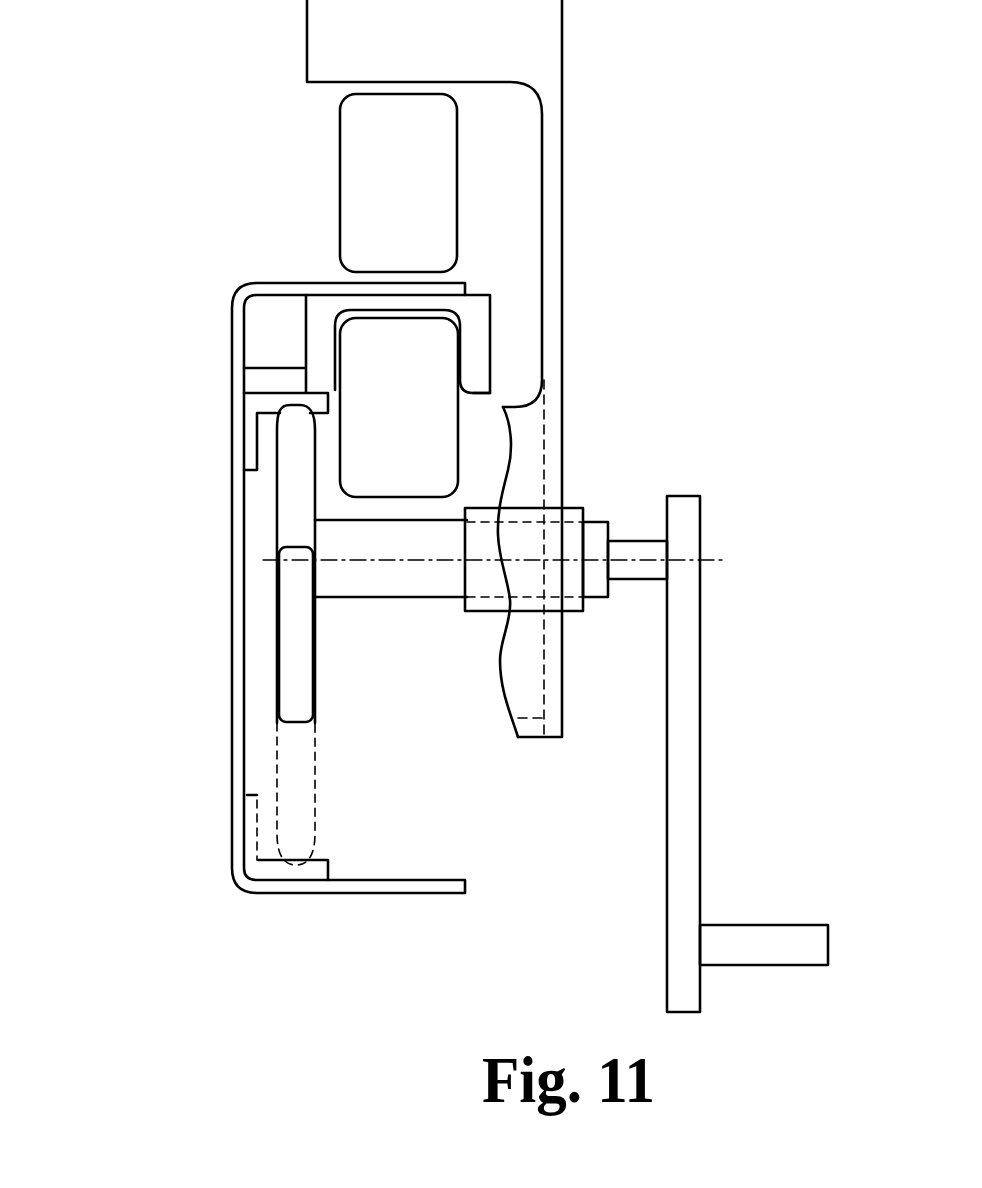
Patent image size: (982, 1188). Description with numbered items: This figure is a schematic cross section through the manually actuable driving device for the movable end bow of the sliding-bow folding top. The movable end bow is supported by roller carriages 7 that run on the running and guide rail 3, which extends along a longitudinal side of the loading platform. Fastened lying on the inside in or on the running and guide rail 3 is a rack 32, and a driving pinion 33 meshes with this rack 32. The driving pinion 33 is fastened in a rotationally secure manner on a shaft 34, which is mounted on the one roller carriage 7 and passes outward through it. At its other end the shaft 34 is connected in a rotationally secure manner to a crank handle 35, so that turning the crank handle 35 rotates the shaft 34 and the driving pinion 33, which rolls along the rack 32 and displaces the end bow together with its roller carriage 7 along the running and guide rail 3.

The running and guide rail 3 is at (237, 705).
The roller carriage 7 is at (562, 233).
The rack 32 is at (262, 405).
The driving pinion 33 is at (296, 489).
The shaft 34 is at (373, 578).
The crank handle 35 is at (687, 802).